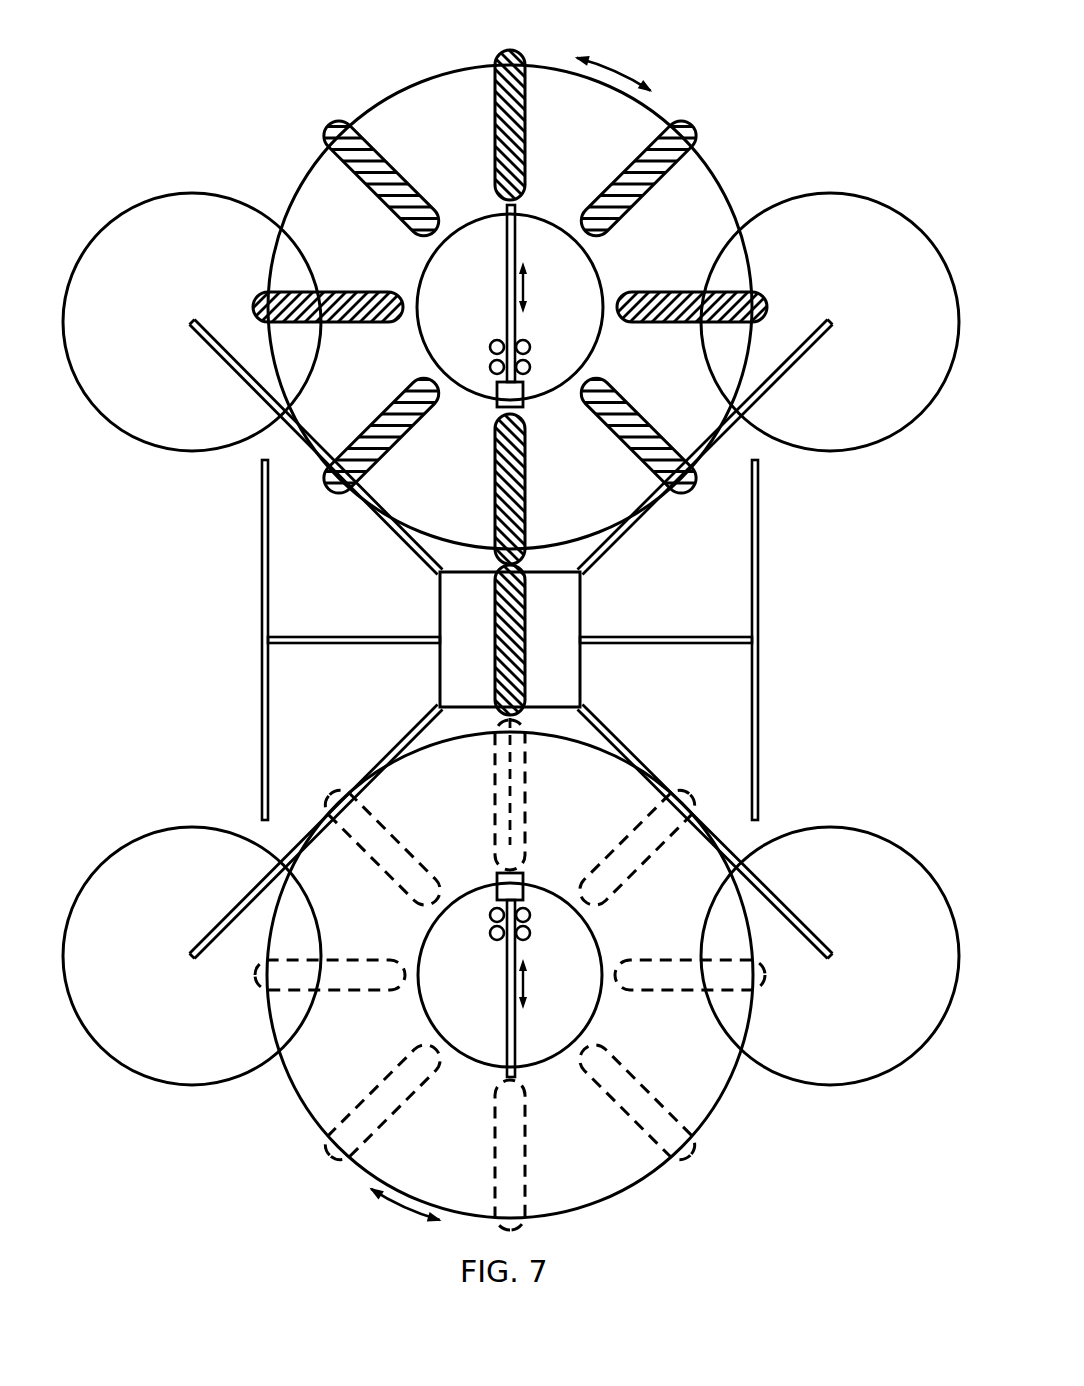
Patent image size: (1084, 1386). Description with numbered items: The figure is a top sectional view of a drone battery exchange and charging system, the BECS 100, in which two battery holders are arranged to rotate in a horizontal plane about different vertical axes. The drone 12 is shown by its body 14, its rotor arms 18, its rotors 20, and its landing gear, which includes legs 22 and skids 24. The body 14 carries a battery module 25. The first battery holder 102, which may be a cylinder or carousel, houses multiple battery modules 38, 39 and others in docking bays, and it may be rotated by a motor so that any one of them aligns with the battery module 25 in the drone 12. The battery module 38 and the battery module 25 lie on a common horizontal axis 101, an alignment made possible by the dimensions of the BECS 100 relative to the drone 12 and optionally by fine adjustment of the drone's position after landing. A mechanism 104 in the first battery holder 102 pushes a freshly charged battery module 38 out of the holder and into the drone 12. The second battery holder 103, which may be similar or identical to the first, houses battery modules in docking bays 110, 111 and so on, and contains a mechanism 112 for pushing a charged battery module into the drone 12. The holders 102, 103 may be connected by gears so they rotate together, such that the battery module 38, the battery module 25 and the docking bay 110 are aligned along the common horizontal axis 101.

The BECS 100 is at (276, 46).
The first battery holder 102 is at (400, 98).
The second battery holder 103 is at (308, 1110).
The drone 12 is at (140, 200).
The rotors 20 is at (92, 238).
The skids 24 is at (258, 568).
The legs 22 is at (340, 635).
The body 14 is at (440, 617).
The battery module 25 is at (495, 680).
The rotor arms 18 is at (415, 727).
The battery module 38 is at (492, 490).
The battery module 39 is at (632, 450).
The mechanism 104 is at (538, 225).
The docking bay 110 is at (495, 812).
The common horizontal axis 101 is at (512, 783).
The docking bay 111 is at (622, 845).
The mechanism 112 is at (538, 892).